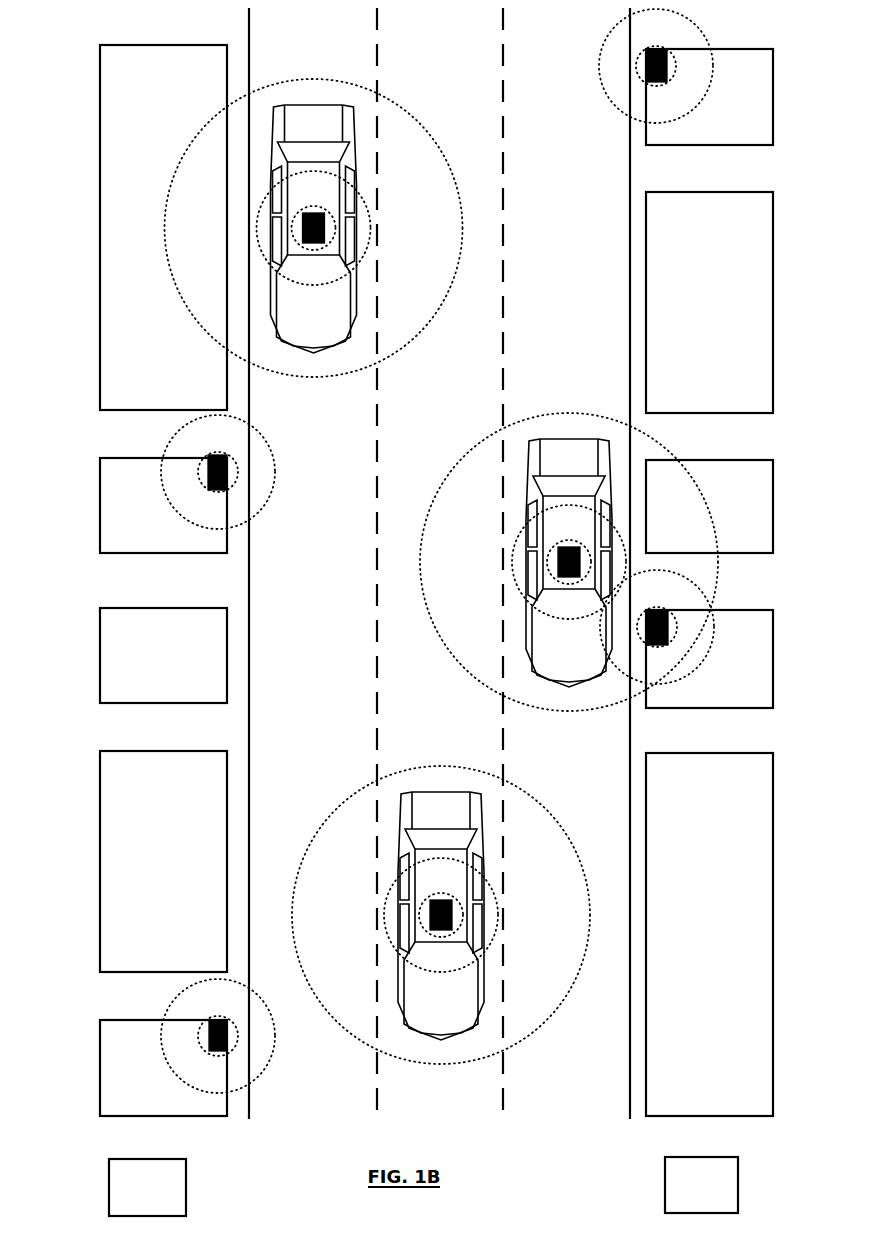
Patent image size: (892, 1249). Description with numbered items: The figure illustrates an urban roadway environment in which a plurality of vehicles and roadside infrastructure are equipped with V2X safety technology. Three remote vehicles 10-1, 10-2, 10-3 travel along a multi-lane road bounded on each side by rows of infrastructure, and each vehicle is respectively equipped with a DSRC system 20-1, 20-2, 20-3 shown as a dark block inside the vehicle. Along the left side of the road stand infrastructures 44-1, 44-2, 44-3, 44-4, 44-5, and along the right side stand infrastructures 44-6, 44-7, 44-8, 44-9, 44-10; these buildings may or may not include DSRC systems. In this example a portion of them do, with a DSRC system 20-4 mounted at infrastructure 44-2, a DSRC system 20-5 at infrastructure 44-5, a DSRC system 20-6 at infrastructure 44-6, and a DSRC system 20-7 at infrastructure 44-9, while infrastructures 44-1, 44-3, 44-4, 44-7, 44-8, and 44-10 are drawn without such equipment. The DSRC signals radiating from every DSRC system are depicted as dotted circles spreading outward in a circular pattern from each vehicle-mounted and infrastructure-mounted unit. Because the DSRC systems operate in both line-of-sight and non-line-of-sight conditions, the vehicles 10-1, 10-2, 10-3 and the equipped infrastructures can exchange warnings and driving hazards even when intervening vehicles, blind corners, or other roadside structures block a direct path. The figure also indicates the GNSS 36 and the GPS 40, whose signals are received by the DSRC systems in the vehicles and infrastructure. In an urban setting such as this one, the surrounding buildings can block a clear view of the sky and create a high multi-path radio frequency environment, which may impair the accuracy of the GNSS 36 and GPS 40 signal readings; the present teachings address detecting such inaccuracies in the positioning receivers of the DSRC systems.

The vehicle 10-1 is at (314, 203).
The vehicle 10-2 is at (441, 895).
The vehicle 10-3 is at (569, 536).
The DSRC system 20-1 is at (305, 230).
The DSRC system 20-2 is at (432, 916).
The DSRC system 20-3 is at (562, 565).
The DSRC system 20-4 is at (208, 474).
The DSRC system 20-5 is at (209, 1036).
The DSRC system 20-6 is at (646, 65).
The DSRC system 20-7 is at (668, 627).
The infrastructure 44-1 is at (100, 228).
The infrastructure 44-2 is at (100, 505).
The infrastructure 44-3 is at (100, 655).
The infrastructure 44-4 is at (100, 858).
The infrastructure 44-5 is at (100, 1063).
The infrastructure 44-6 is at (773, 95).
The infrastructure 44-7 is at (773, 300).
The infrastructure 44-8 is at (773, 505).
The infrastructure 44-9 is at (773, 655).
The infrastructure 44-10 is at (773, 930).
The GNSS 36 is at (110, 1187).
The GPS 40 is at (665, 1185).